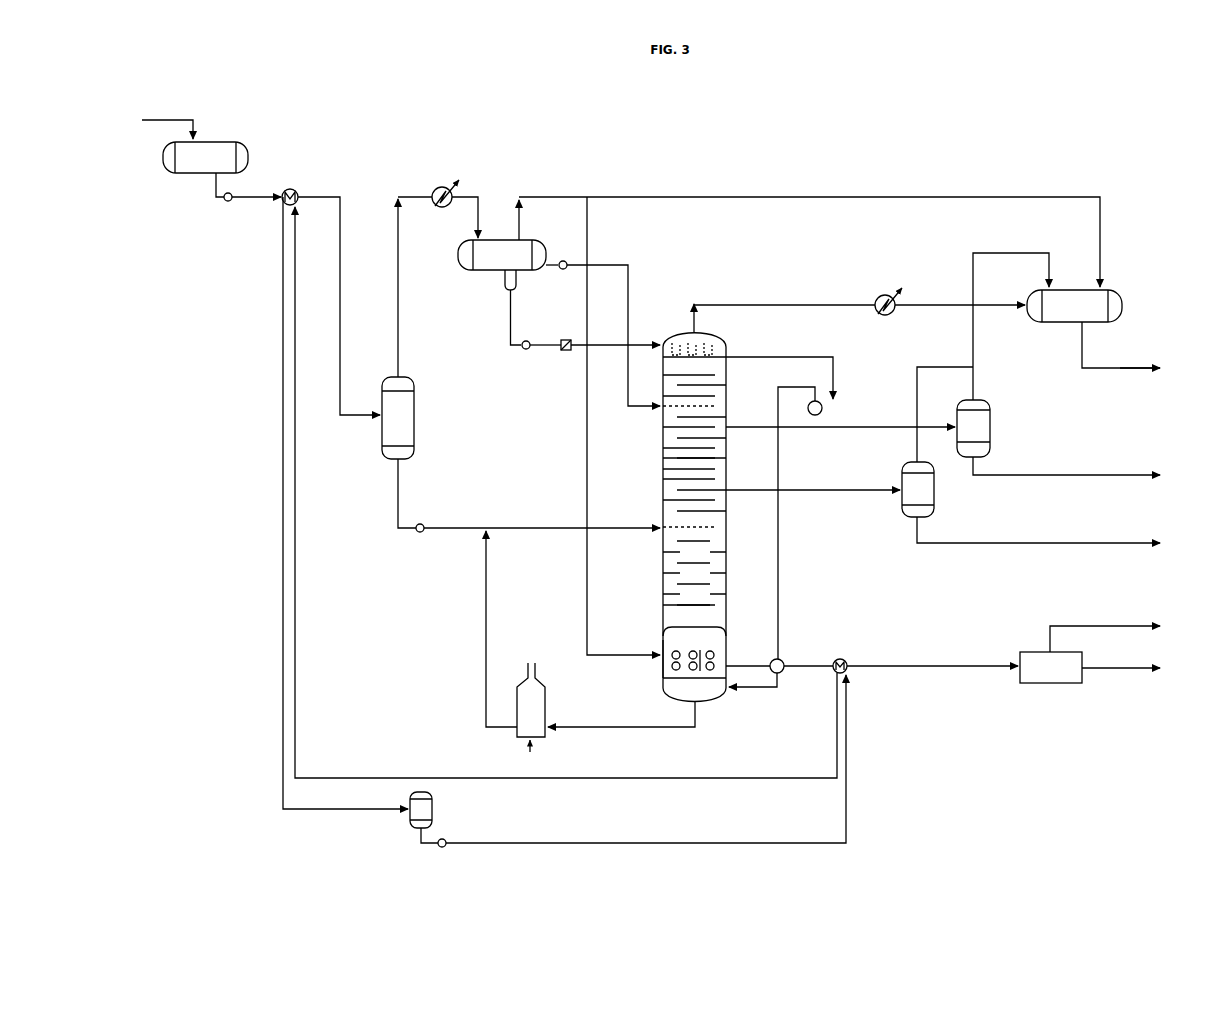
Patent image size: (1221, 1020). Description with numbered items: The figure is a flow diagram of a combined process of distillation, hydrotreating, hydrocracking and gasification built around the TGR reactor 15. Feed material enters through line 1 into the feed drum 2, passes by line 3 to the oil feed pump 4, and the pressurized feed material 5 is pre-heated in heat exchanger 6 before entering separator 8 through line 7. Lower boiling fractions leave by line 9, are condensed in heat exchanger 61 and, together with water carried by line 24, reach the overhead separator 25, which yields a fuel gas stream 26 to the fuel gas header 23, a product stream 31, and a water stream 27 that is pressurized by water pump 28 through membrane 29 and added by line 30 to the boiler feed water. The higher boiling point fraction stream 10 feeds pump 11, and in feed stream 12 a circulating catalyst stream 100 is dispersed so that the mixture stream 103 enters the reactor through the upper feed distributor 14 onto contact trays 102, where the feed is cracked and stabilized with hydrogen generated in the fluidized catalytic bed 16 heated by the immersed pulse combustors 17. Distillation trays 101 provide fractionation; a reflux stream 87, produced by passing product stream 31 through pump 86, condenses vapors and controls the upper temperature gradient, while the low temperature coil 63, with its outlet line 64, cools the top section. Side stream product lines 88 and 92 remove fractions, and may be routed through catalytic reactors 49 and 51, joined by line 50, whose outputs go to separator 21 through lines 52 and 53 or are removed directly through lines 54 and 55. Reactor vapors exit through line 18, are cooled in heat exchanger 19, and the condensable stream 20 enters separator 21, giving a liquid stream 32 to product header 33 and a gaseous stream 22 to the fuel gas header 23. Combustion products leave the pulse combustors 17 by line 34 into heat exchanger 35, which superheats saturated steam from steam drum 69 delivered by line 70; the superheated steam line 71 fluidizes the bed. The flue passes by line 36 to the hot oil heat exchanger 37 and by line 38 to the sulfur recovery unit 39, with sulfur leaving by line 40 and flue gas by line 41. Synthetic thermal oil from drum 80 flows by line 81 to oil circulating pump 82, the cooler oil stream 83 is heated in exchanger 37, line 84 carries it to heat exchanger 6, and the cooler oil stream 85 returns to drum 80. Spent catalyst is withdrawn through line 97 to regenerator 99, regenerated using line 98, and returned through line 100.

The feed line 1 is at (161, 125).
The feed drum 2 is at (165, 174).
The feed line to pump 3 is at (211, 195).
The oil feed pump 4 is at (222, 206).
The feed material 5 is at (260, 200).
The heat exchanger 6 is at (288, 186).
The line to separator 7 is at (335, 304).
The separator 8 is at (374, 435).
The lower boiling fraction line 9 is at (393, 290).
The higher boiling point fraction stream 10 is at (391, 478).
The pump 11 is at (412, 534).
The feed stream 12 is at (462, 534).
The upper feed distributor 14 is at (668, 533).
The TGR reactor 15 is at (660, 565).
The fluidized catalytic bed 16 is at (676, 637).
The pulse combustors 17 is at (668, 666).
The reactor product vapor line 18 is at (803, 307).
The heat exchanger 19 is at (880, 318).
The condensable stream 20 is at (960, 310).
The separator 21 is at (1026, 325).
The gaseous stream 22 is at (690, 208).
The fuel gas header 23 is at (576, 588).
The water line 24 is at (472, 210).
The overhead separator 25 is at (452, 268).
The fuel gas stream 26 is at (570, 204).
The water stream 27 is at (502, 311).
The water pump 28 is at (516, 355).
The membrane 29 is at (562, 355).
The treated water line 30 is at (615, 350).
The product stream 31 is at (552, 275).
The liquid stream 32 is at (1077, 352).
The product header 33 is at (1136, 375).
The combustion products line 34 is at (762, 665).
The heat exchanger 35 is at (789, 660).
The combustion products line 36 is at (815, 672).
The hot oil heat exchanger 37 is at (850, 660).
The line to sulfur recovery unit 38 is at (927, 670).
The sulfur recovery unit 39 is at (1040, 686).
The sulfur line 40 is at (1131, 672).
The flue gas line 41 is at (1118, 632).
The catalytic reactor 49 is at (900, 520).
The connecting line 50 is at (912, 440).
The catalytic reactor 51 is at (995, 422).
The gaseous product line 52 is at (978, 375).
The line to separator 53 is at (1013, 258).
The direct product removal line 54 is at (1050, 547).
The direct product removal line 55 is at (1028, 480).
The heat exchanger 61 is at (436, 213).
The low temperature coil 63 is at (667, 362).
The coil outlet line 64 is at (766, 360).
The steam drum 69 is at (824, 410).
The saturated steam line 70 is at (775, 394).
The superheated steam line 71 is at (760, 695).
The drum 80 is at (403, 822).
The oil line 81 is at (414, 840).
The oil circulating pump 82 is at (440, 851).
The cooler oil stream 83 is at (838, 808).
The hot oil line 84 is at (830, 742).
The cooler oil stream 85 is at (277, 240).
The pump 86 is at (563, 276).
The reflux stream 87 is at (630, 410).
The side stream product line 88 is at (845, 492).
The side stream product line 92 is at (838, 430).
The catalyst removal line 97 is at (676, 735).
The regenerator line 98 is at (522, 744).
The regenerator 99 is at (548, 706).
The circulating catalyst stream 100 is at (484, 676).
The distillation trays 101 is at (668, 468).
The contact trays 102 is at (666, 598).
The feed and catalyst mixture stream 103 is at (540, 534).